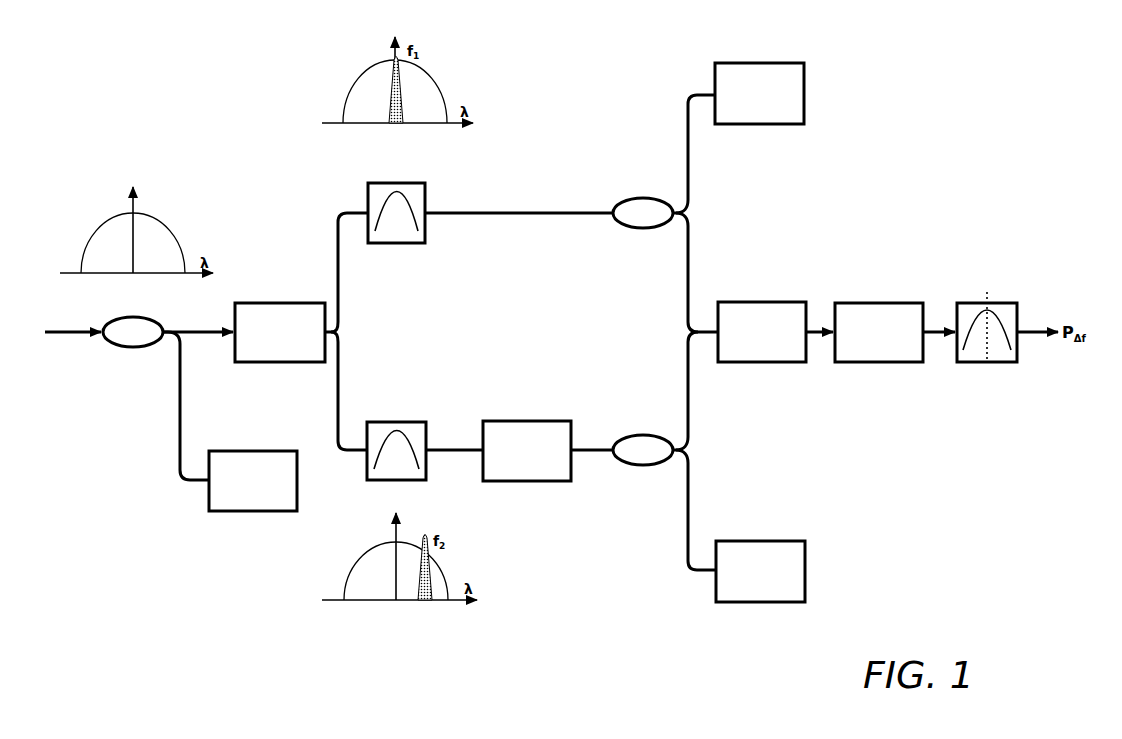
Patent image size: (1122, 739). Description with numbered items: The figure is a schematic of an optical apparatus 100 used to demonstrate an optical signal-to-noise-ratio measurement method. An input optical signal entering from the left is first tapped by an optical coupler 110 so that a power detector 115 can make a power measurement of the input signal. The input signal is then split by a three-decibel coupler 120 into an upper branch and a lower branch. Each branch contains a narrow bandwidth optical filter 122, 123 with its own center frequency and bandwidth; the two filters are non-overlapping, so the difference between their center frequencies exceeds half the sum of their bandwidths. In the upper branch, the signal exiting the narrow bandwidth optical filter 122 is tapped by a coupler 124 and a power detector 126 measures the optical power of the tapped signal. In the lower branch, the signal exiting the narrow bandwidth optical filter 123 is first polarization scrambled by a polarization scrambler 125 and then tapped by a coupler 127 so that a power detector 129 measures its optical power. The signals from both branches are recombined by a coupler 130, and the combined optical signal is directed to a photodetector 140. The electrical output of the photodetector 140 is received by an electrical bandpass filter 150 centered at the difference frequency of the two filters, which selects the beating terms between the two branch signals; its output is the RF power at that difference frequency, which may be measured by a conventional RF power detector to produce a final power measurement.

The optical apparatus 100 is at (984, 31).
The optical coupler 110 is at (123, 348).
The power detector 115 is at (207, 511).
The 3 dB coupler 120 is at (289, 362).
The narrow bandwidth optical filter 122 is at (367, 184).
The narrow bandwidth optical filter 123 is at (376, 422).
The coupler 124 is at (641, 199).
The polarization scrambler 125 is at (527, 421).
The power detector 126 is at (731, 63).
The coupler 127 is at (641, 436).
The power detector 129 is at (726, 602).
The coupler 130 is at (784, 362).
The photodetector 140 is at (899, 362).
The electrical bandpass filter 150 is at (994, 362).